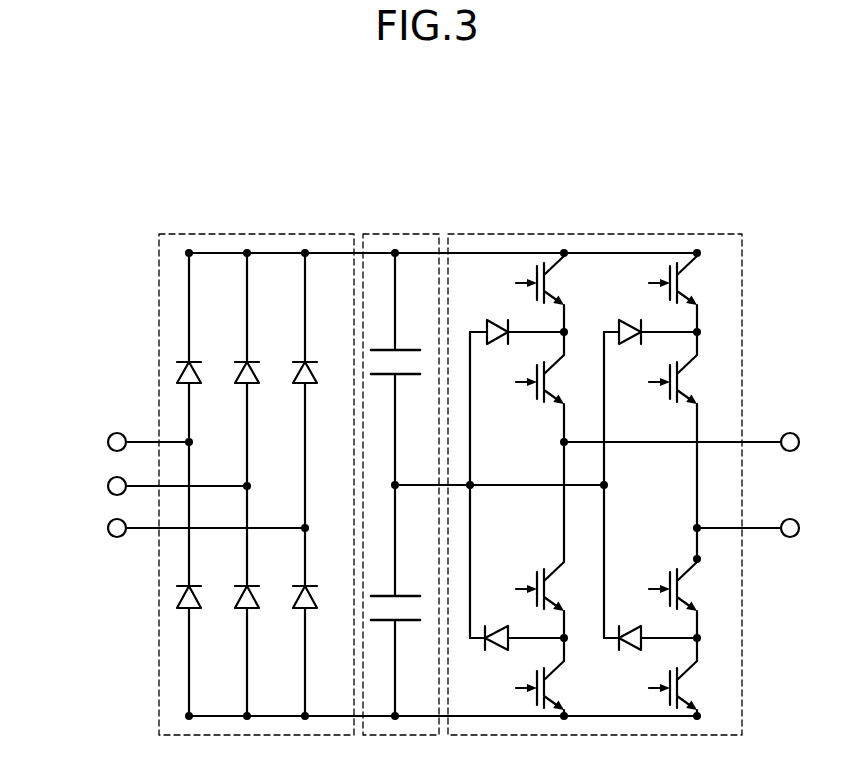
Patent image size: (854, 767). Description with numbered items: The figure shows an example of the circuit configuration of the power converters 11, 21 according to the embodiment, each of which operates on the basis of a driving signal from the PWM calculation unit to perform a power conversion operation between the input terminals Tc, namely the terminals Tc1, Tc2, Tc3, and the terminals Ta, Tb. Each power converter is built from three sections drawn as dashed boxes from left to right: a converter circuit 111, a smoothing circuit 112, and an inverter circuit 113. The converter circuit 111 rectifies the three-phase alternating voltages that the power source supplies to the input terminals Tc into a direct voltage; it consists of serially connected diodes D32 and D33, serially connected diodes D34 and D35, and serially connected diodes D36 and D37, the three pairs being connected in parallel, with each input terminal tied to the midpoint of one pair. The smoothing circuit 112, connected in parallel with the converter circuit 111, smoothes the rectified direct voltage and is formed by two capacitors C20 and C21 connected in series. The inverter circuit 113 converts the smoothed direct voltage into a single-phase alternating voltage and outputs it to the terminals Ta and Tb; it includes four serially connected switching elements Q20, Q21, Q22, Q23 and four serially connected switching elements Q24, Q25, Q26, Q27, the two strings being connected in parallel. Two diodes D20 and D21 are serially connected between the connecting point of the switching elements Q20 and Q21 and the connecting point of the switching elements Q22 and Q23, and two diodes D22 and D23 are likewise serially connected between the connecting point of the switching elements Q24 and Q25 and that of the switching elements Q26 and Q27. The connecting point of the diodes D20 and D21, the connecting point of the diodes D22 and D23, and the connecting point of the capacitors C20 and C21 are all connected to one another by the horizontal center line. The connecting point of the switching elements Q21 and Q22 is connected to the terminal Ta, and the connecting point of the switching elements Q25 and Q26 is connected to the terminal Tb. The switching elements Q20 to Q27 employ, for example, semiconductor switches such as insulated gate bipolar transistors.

The power converter 11 is at (642, 176).
The power converter 21 is at (450, 472).
The converter circuit 111 is at (295, 215).
The smoothing circuit 112 is at (408, 215).
The inverter circuit 113 is at (689, 215).
The diode D32 is at (206, 386).
The diode D33 is at (206, 611).
The diode D34 is at (264, 386).
The diode D35 is at (264, 611).
The diode D36 is at (322, 386).
The diode D37 is at (322, 611).
The capacitor C20 is at (405, 348).
The capacitor C21 is at (405, 594).
The switching element Q20 is at (539, 291).
The switching element Q21 is at (539, 390).
The switching element Q22 is at (539, 577).
The switching element Q23 is at (539, 677).
The switching element Q24 is at (672, 291).
The switching element Q25 is at (672, 390).
The switching element Q26 is at (672, 577).
The switching element Q27 is at (672, 677).
The diode D20 is at (517, 344).
The diode D21 is at (517, 627).
The diode D22 is at (650, 344).
The diode D23 is at (650, 627).
The input terminals Tc is at (56, 423).
The terminal Tc1 is at (107, 442).
The terminal Tc2 is at (107, 486).
The terminal Tc3 is at (107, 528).
The terminal Ta is at (796, 414).
The terminal Tb is at (796, 500).